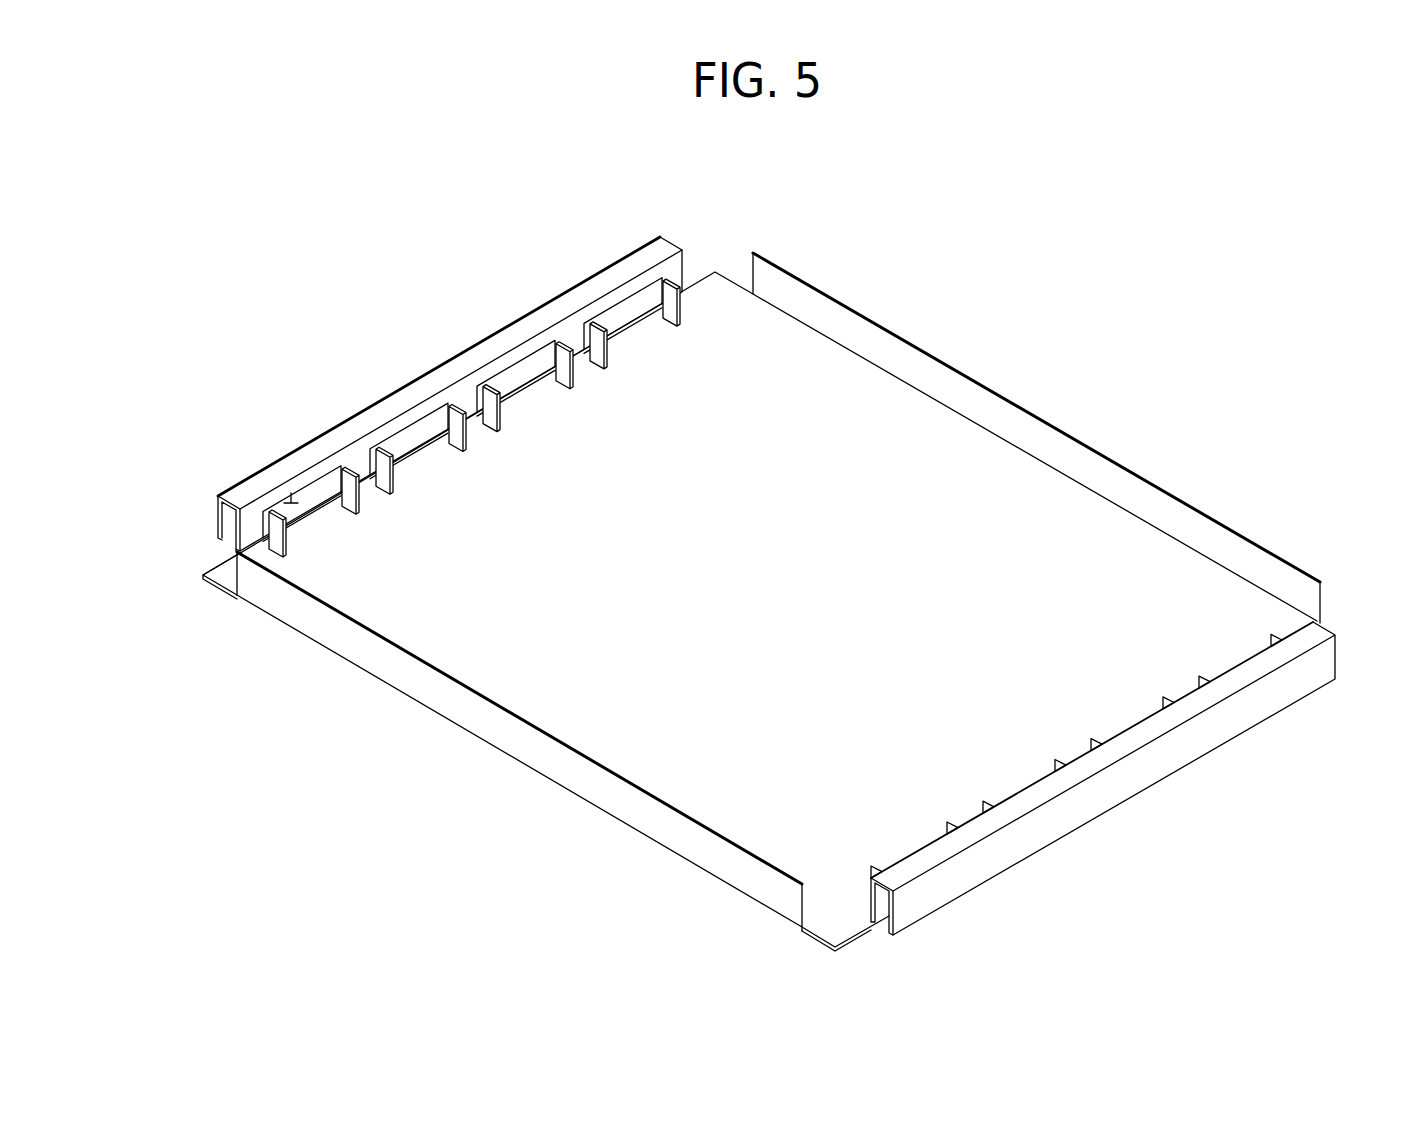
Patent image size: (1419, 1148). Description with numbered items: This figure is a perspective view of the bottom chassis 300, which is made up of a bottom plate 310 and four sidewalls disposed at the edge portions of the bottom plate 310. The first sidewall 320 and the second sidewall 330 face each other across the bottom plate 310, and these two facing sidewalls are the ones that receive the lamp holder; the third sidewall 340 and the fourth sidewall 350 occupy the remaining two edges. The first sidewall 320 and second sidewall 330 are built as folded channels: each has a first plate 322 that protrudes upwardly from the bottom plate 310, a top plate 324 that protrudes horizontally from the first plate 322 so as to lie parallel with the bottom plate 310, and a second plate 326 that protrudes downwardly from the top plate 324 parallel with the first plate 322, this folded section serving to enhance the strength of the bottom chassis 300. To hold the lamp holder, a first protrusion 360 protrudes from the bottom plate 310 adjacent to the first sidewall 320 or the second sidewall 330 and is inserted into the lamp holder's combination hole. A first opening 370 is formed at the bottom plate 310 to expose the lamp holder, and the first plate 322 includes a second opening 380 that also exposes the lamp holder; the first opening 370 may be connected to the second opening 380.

The bottom chassis 300 is at (333, 321).
The bottom plate 310 is at (930, 437).
The first sidewall 320 is at (398, 382).
The first plate 322 is at (240, 528).
The top plate 324 is at (572, 298).
The second plate 326 is at (217, 508).
The second sidewall 330 is at (1078, 792).
The third sidewall 340 is at (503, 740).
The fourth sidewall 350 is at (1075, 468).
The first protrusion 360 is at (237, 548).
The first opening 370 is at (330, 490).
The second opening 380 is at (290, 495).